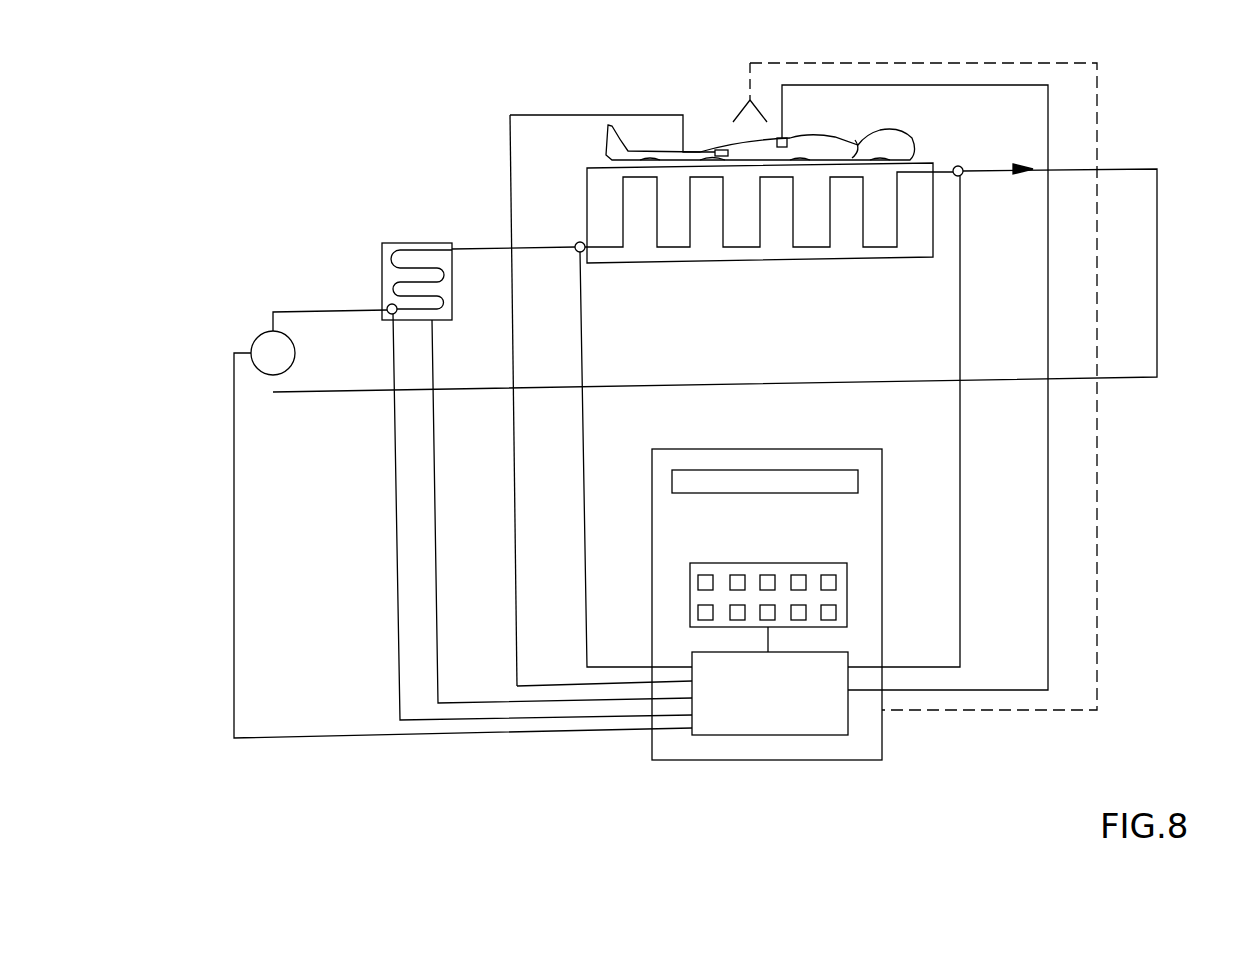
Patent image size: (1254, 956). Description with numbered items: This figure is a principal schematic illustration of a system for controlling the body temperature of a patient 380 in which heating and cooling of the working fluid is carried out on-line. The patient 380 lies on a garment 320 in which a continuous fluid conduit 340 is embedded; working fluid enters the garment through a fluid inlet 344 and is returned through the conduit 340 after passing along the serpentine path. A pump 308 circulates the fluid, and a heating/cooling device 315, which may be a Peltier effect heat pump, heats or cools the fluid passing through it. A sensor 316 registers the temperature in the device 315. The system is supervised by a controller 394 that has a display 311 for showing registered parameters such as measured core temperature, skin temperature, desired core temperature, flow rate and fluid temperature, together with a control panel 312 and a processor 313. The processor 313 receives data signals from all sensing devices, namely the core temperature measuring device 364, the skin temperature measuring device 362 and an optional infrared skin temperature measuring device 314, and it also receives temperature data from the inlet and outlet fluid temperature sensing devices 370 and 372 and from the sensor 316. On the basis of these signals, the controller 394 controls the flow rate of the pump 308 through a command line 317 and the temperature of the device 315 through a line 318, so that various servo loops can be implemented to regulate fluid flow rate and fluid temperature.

The pump 308 is at (255, 340).
The display 311 is at (737, 470).
The control panel 312 is at (690, 591).
The processor 313 is at (768, 718).
The infrared-skin-temperature measuring device 314 is at (748, 98).
The heating/cooling device 315 is at (382, 268).
The sensor 316 is at (390, 312).
The command line 317 is at (272, 738).
The line 318 is at (400, 557).
The garment 320 is at (710, 263).
The continuous fluid conduit 340 is at (1157, 213).
The fluid inlet 344 is at (485, 248).
The skin temperature measuring device 362 is at (787, 140).
The core temperature measuring device 364 is at (727, 143).
The inlet fluid temperature sensing device 370 is at (583, 252).
The outlet fluid temperature sensing device 372 is at (963, 175).
The patient 380 is at (738, 142).
The controller 394 is at (805, 762).